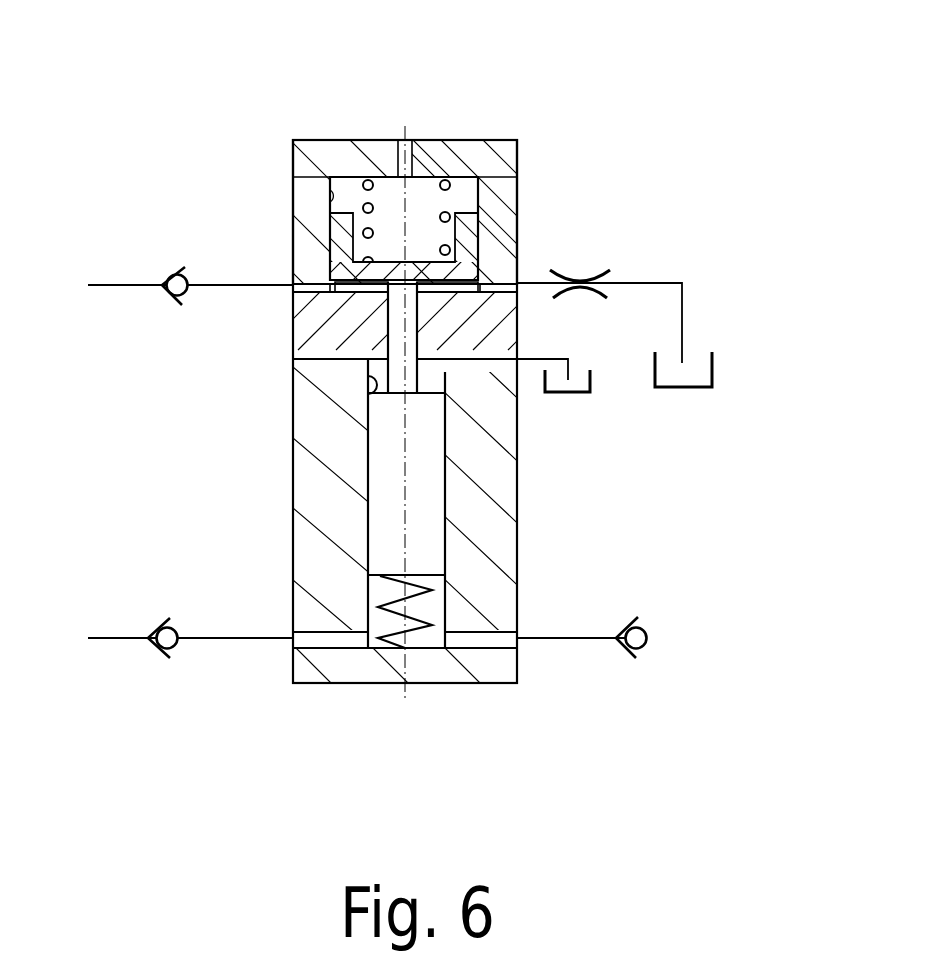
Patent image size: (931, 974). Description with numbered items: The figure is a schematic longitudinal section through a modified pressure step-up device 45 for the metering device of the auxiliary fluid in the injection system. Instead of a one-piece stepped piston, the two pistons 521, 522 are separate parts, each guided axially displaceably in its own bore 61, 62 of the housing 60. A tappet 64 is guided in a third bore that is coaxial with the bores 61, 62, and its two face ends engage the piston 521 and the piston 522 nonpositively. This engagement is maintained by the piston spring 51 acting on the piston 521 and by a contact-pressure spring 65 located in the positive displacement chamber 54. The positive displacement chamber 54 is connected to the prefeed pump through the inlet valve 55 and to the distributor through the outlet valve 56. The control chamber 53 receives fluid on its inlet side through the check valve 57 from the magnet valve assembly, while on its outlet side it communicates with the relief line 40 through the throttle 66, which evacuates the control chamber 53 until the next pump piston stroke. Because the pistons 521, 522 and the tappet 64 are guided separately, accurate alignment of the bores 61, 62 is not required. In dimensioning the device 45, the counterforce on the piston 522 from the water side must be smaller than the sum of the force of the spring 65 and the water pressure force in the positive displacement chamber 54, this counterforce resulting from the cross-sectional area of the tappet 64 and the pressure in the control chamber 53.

The relief line 40 is at (683, 362).
The pressure step-up device 45 is at (537, 457).
The piston spring 51 is at (367, 182).
The control chamber 53 is at (345, 272).
The positive displacement chamber 54 is at (385, 590).
The inlet valve 55 is at (177, 647).
The outlet valve 56 is at (648, 642).
The check valve 57 is at (170, 272).
The housing 60 is at (493, 182).
The bore 61 is at (292, 146).
The bore 62 is at (377, 395).
The tappet 64 is at (400, 320).
The contact-pressure spring 65 is at (432, 622).
The throttle 66 is at (580, 270).
The piston 521 is at (463, 232).
The piston 522 is at (430, 508).